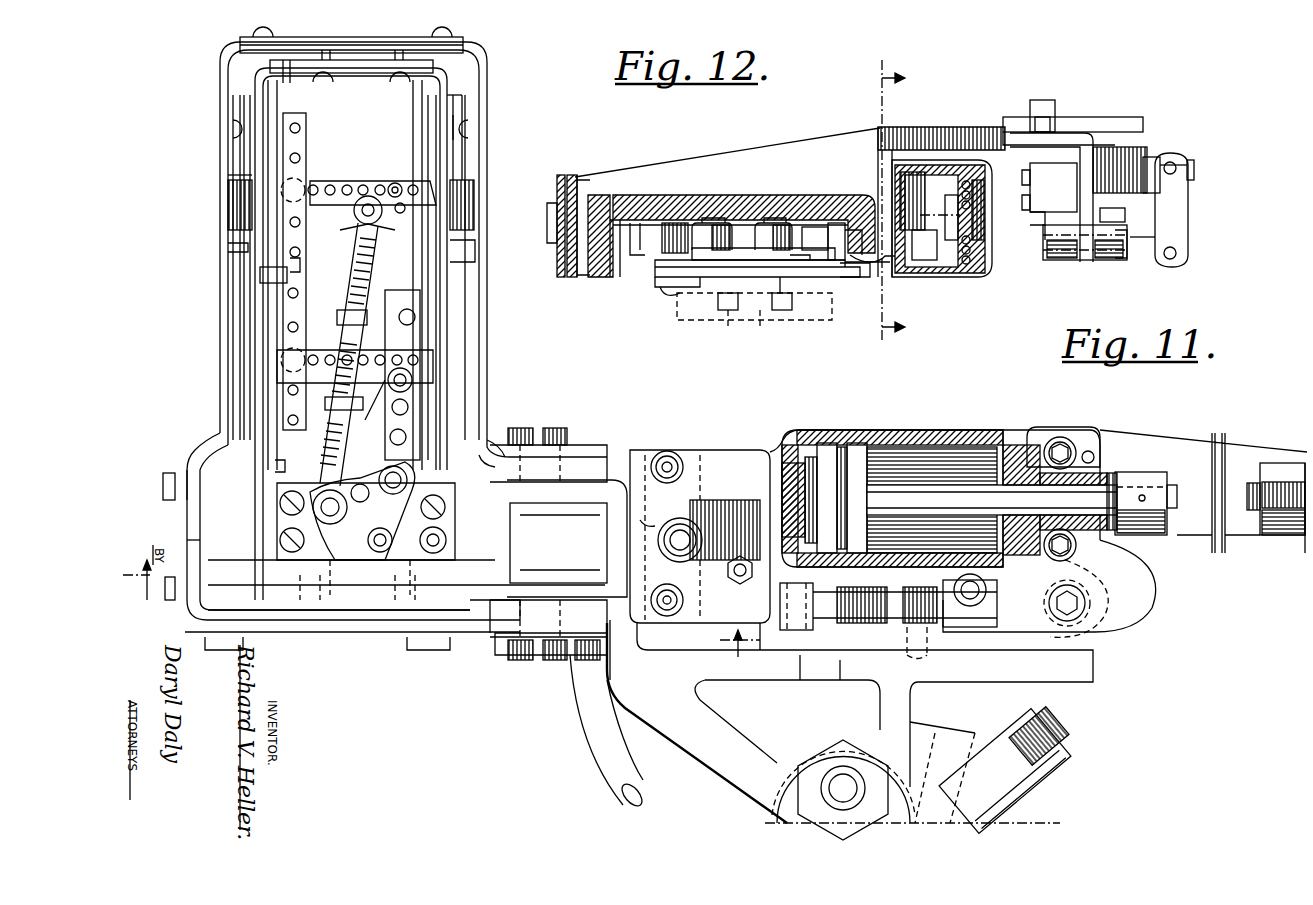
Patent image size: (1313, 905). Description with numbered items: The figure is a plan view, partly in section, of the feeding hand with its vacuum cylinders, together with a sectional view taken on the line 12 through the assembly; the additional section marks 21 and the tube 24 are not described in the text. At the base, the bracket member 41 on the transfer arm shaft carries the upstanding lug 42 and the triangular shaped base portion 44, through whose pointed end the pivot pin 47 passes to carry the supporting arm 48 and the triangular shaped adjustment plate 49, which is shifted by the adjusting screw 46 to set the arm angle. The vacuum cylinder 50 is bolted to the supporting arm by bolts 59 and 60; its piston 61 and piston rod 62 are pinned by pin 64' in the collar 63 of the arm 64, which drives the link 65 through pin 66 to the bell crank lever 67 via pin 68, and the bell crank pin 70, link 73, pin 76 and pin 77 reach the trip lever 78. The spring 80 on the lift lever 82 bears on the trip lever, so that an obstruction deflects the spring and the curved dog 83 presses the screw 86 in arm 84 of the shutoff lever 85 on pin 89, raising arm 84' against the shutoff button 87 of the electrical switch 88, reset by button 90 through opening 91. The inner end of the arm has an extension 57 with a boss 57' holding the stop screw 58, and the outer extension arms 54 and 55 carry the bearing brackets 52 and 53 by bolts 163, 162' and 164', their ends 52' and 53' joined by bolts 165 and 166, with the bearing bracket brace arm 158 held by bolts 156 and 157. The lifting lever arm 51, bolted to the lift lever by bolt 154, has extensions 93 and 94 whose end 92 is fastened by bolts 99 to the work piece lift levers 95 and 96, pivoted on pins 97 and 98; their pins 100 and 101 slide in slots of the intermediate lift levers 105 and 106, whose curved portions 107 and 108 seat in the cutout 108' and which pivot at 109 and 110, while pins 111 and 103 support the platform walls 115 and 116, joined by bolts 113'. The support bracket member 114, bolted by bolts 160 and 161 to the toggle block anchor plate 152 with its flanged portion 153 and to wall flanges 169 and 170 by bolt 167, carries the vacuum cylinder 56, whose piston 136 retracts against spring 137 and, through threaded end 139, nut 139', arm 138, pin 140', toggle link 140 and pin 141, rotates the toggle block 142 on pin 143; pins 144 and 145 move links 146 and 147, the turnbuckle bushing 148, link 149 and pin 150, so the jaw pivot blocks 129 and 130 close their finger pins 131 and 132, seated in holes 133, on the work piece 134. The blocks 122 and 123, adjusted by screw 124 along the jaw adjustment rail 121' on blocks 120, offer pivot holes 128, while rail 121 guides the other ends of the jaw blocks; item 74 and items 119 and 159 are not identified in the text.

In FIG. 11, the section line 12 is at (443, 608).
In FIG. 12, the section line 21 is at (871, 204).
In FIG. 11, the flexible tube 24 is at (590, 768).
In FIG. 11, the bracket member 41 is at (955, 730).
In FIG. 11, the upstanding lug 42 is at (1062, 758).
In FIG. 11, the triangular shaped base portion 44 is at (915, 722).
In FIG. 11, the adjusting screw 46 is at (1052, 722).
In FIG. 11, the pivot pin 47 is at (912, 790).
In FIG. 11, the supporting arm 48 is at (718, 772).
In FIG. 11, the triangular shaped adjustment plate 49 is at (920, 775).
In FIG. 11, the vacuum cylinder 50 is at (885, 448).
In FIG. 11, the lifting lever arm 51 is at (560, 542).
In FIG. 12, the lifting lever arm 51 is at (905, 128).
In FIG. 11, the bearing bracket 52 is at (394, 54).
In FIG. 11, the bearing bracket end 52' is at (371, 74).
In FIG. 11, the bearing bracket 53 is at (287, 323).
In FIG. 12, the bearing bracket 53 is at (594, 209).
In FIG. 11, the bearing bracket end 53' is at (308, 83).
In FIG. 11, the extension arm 54 is at (510, 602).
In FIG. 11, the extension arm 55 is at (585, 490).
In FIG. 11, the vacuum cylinder 56 is at (608, 497).
In FIG. 12, the vacuum cylinder 56 is at (930, 160).
In FIG. 11, the extension 57 is at (1203, 464).
In FIG. 11, the boss 57' is at (1281, 549).
In FIG. 11, the stop screw 58 is at (1252, 483).
In FIG. 11, the bolt 59 is at (1060, 437).
In FIG. 11, the bolt 60 is at (1070, 552).
In FIG. 11, the piston 61 is at (830, 450).
In FIG. 11, the piston rod 62 is at (925, 498).
In FIG. 11, the collar 63 is at (1130, 472).
In FIG. 11, the arm 64 is at (1072, 588).
In FIG. 11, the pin 64' is at (1166, 449).
In FIG. 11, the link 65 is at (924, 628).
In FIG. 11, the pin 66 is at (975, 606).
In FIG. 11, the bell crank lever 67 is at (852, 625).
In FIG. 11, the pin 68 is at (845, 682).
In FIG. 11, the pin 70 is at (830, 625).
In FIG. 12, the link 73 is at (1190, 210).
In FIG. 11, the lever link 74 is at (812, 680).
In FIG. 12, the lever link 74 is at (1180, 165).
In FIG. 12, the pin 76 is at (1192, 170).
In FIG. 11, the pin 77 is at (765, 626).
In FIG. 12, the pin 77 is at (1152, 157).
In FIG. 11, the trip lever 78 is at (805, 585).
In FIG. 12, the trip lever 78 is at (1120, 170).
In FIG. 11, the spring 80 is at (770, 445).
In FIG. 12, the spring 80 is at (1105, 117).
In FIG. 11, the lift lever 82 is at (638, 520).
In FIG. 12, the lift lever 82 is at (1110, 215).
In FIG. 12, the curved dog 83 is at (1122, 262).
In FIG. 11, the arm 84 is at (787, 721).
In FIG. 12, the arm 84' is at (1034, 249).
In FIG. 12, the shutoff lever 85 is at (1075, 262).
In FIG. 11, the screw 86 is at (735, 580).
In FIG. 12, the shutoff button 87 is at (1038, 216).
In FIG. 12, the electrical switch 88 is at (1049, 187).
In FIG. 12, the pin 89 is at (1160, 237).
In FIG. 11, the button 90 is at (668, 548).
In FIG. 12, the button 90 is at (1022, 150).
In FIG. 11, the opening 91 is at (720, 528).
In FIG. 11, the end 92 is at (190, 538).
In FIG. 12, the end 92 is at (590, 278).
In FIG. 11, the extension 93 is at (292, 600).
In FIG. 12, the extension 93 is at (762, 140).
In FIG. 11, the extension 94 is at (490, 622).
In FIG. 12, the extension 94 is at (870, 229).
In FIG. 11, the work piece lift lever 95 is at (240, 305).
In FIG. 12, the work piece lift lever 95 is at (614, 278).
In FIG. 11, the work piece lift lever 96 is at (430, 320).
In FIG. 12, the work piece lift lever 96 is at (852, 262).
In FIG. 11, the pin 97 is at (232, 430).
In FIG. 11, the pin 98 is at (490, 445).
In FIG. 11, the bolt 99 is at (218, 462).
In FIG. 11, the pin 100 is at (230, 250).
In FIG. 11, the pin 101 is at (455, 255).
In FIG. 11, the pin 103 is at (440, 120).
In FIG. 11, the intermediate lift lever 105 is at (250, 330).
In FIG. 11, the intermediate lift lever 106 is at (455, 300).
In FIG. 11, the curved portion 107 is at (470, 195).
In FIG. 11, the curved portion 108 is at (203, 205).
In FIG. 11, the cutout portion 108' is at (199, 179).
In FIG. 11, the pivot 109 is at (233, 130).
In FIG. 11, the pivot 110 is at (462, 125).
In FIG. 11, the pin 111 is at (422, 390).
In FIG. 11, the bolt 113' is at (481, 272).
In FIG. 12, the support bracket member 114 is at (712, 278).
In FIG. 11, the platform wall 115 is at (410, 340).
In FIG. 12, the platform wall 115 is at (838, 222).
In FIG. 11, the platform wall 116 is at (262, 277).
In FIG. 12, the platform wall 116 is at (630, 215).
In FIG. 12, the contact 119 is at (868, 228).
In FIG. 11, the block 120 is at (300, 268).
In FIG. 11, the jaw adjustment rail 121 is at (486, 282).
In FIG. 11, the jaw adjustment rail 121' is at (208, 275).
In FIG. 11, the block 122 is at (290, 392).
In FIG. 11, the block 123 is at (287, 118).
In FIG. 11, the adjusting screw 124 is at (238, 62).
In FIG. 11, the hole 128 is at (290, 160).
In FIG. 11, the jaw pivot block 129 is at (295, 165).
In FIG. 11, the jaw pivot block 130 is at (378, 325).
In FIG. 12, the finger pin 131 is at (782, 282).
In FIG. 11, the finger pin 132 is at (395, 183).
In FIG. 12, the finger pin 132 is at (728, 312).
In FIG. 11, the hole 133 is at (305, 357).
In FIG. 12, the work piece 134 is at (760, 312).
In FIG. 12, the piston 136 is at (968, 175).
In FIG. 12, the spring 137 is at (985, 190).
In FIG. 12, the arm 138 is at (855, 257).
In FIG. 12, the screw threaded end 139 is at (925, 239).
In FIG. 12, the nut 139' is at (952, 252).
In FIG. 12, the toggle link 140 is at (810, 304).
In FIG. 12, the pin 140' is at (807, 206).
In FIG. 12, the pin 141 is at (737, 272).
In FIG. 11, the toggle block 142 is at (400, 590).
In FIG. 12, the toggle block 142 is at (738, 245).
In FIG. 11, the pin 143 is at (300, 545).
In FIG. 12, the pin 144 is at (708, 224).
In FIG. 11, the pin 145 is at (393, 494).
In FIG. 12, the pin 145 is at (775, 224).
In FIG. 11, the link 146 is at (335, 432).
In FIG. 11, the link 147 is at (388, 420).
In FIG. 11, the turnbuckle bushing 148 is at (300, 290).
In FIG. 11, the link 149 is at (355, 238).
In FIG. 11, the pin 150 is at (368, 200).
In FIG. 11, the toggle block anchor plate 152 is at (332, 595).
In FIG. 12, the toggle block anchor plate 152 is at (690, 272).
In FIG. 12, the flanged portion 153 is at (662, 225).
In FIG. 11, the bolt 154 is at (672, 462).
In FIG. 12, the bolt 154 is at (1043, 100).
In FIG. 11, the bolt 156 is at (170, 478).
In FIG. 12, the bolt 156 is at (1050, 118).
In FIG. 11, the bolt 157 is at (168, 590).
In FIG. 12, the bolt 157 is at (557, 215).
In FIG. 11, the bearing bracket brace arm 158 is at (270, 640).
In FIG. 12, the bearing bracket brace arm 158 is at (567, 177).
In FIG. 11, the terminal nut 159 is at (425, 93).
In FIG. 11, the bolt 160 is at (292, 492).
In FIG. 11, the bolt 161 is at (570, 404).
In FIG. 12, the bolt 161 is at (660, 268).
In FIG. 11, the bolt 162' is at (539, 678).
In FIG. 11, the bolt 163 is at (580, 658).
In FIG. 11, the bolt 164' is at (554, 673).
In FIG. 11, the bolt 165 is at (253, 33).
In FIG. 11, the bolt 166 is at (452, 33).
In FIG. 11, the bolt 167 is at (477, 457).
In FIG. 11, the flanged portion 169 is at (447, 508).
In FIG. 11, the flanged portion 170 is at (410, 600).